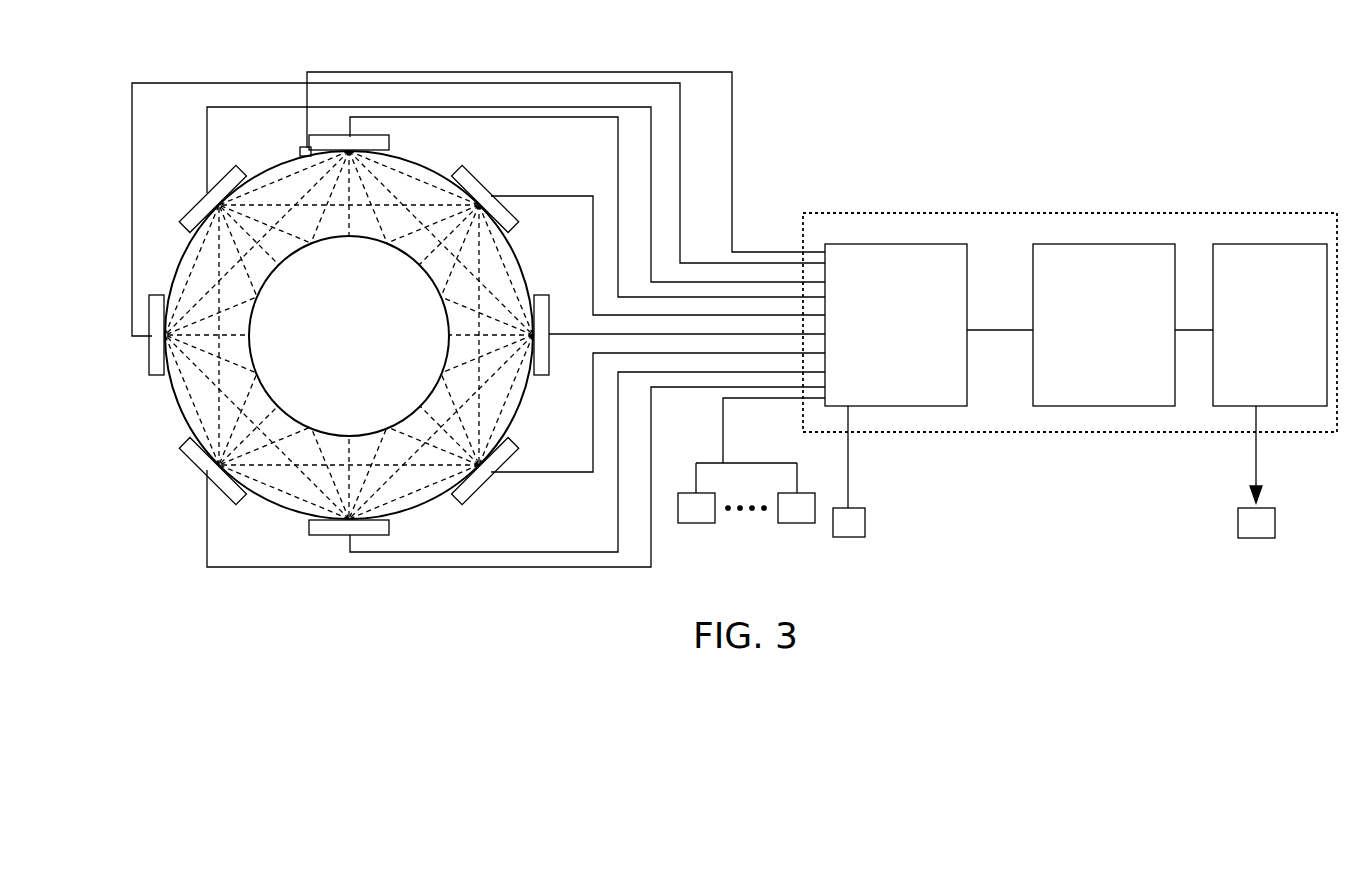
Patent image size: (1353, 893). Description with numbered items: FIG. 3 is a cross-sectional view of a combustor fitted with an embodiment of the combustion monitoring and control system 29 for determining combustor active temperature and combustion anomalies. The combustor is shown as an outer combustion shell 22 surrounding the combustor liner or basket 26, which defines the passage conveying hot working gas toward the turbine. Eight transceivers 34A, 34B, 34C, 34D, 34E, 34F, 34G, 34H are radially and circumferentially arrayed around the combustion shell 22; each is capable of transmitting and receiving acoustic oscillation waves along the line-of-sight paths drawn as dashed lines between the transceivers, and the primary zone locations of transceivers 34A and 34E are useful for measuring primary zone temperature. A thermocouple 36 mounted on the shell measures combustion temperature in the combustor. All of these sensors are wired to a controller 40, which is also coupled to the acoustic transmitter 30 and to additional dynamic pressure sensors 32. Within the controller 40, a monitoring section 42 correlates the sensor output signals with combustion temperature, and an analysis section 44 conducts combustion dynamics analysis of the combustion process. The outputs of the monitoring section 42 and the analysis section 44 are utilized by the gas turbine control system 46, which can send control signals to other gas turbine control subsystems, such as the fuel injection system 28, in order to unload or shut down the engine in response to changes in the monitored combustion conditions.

The combustion shell 22 is at (267, 503).
The combustor liner or basket 26 is at (290, 415).
The fuel injection system 28 is at (1256, 472).
The combustion monitoring and control system 29 is at (861, 66).
The acoustic transmitter 30 is at (849, 471).
The dynamic pressure sensors 32 is at (751, 460).
The transceiver 34A is at (337, 143).
The transceiver 34B is at (477, 192).
The transceiver 34C is at (541, 305).
The transceiver 34D is at (480, 487).
The transceiver 34E is at (327, 530).
The transceiver 34F is at (197, 455).
The transceiver 34G is at (150, 355).
The transceiver 34H is at (202, 210).
The thermocouple 36 is at (300, 150).
The controller 40 is at (1048, 172).
The monitoring section 42 is at (940, 395).
The analysis section 44 is at (1085, 385).
The gas turbine control system 46 is at (1305, 395).